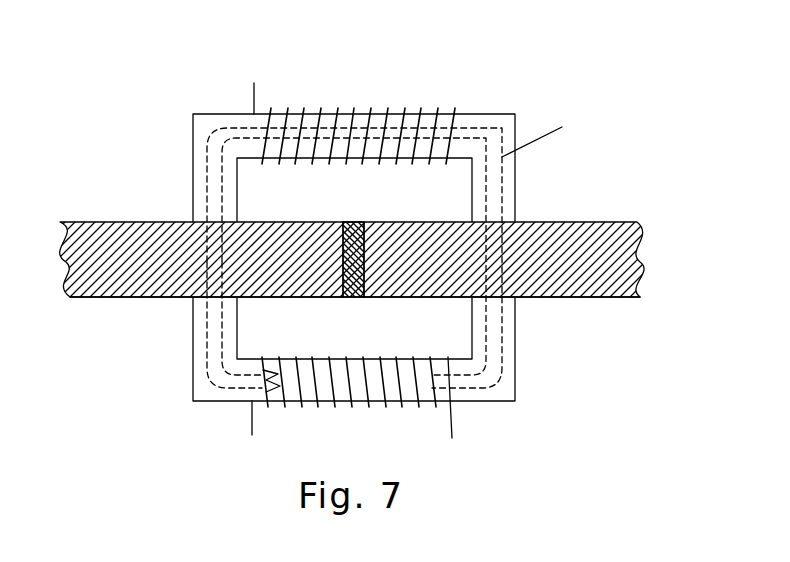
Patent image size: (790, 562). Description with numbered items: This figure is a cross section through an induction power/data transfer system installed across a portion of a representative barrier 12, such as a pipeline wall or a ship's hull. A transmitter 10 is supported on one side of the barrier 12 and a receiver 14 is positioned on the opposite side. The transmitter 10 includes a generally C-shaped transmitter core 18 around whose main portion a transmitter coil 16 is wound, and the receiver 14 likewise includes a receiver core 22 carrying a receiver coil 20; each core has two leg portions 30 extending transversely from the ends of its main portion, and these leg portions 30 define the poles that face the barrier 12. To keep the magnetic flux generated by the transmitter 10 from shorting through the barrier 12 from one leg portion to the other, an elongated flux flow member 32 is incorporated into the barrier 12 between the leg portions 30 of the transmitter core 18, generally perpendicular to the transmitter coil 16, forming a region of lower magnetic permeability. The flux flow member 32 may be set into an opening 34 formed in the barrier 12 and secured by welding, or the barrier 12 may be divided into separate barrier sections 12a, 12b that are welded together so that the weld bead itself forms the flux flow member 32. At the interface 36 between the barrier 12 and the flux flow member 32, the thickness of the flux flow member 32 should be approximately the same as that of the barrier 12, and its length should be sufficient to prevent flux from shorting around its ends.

The transmitter 10 is at (362, 249).
The barrier 12 is at (362, 253).
The barrier section 12a is at (292, 292).
The barrier section 12b is at (417, 293).
The receiver 14 is at (362, 286).
The transmitter coil 16 is at (322, 103).
The transmitter core 18 is at (222, 108).
The receiver coil 20 is at (320, 415).
The receiver core 22 is at (221, 405).
The leg portions 30 is at (193, 158).
The flux flow member 32 is at (355, 225).
The opening 34 is at (345, 282).
The interface 36 is at (342, 226).